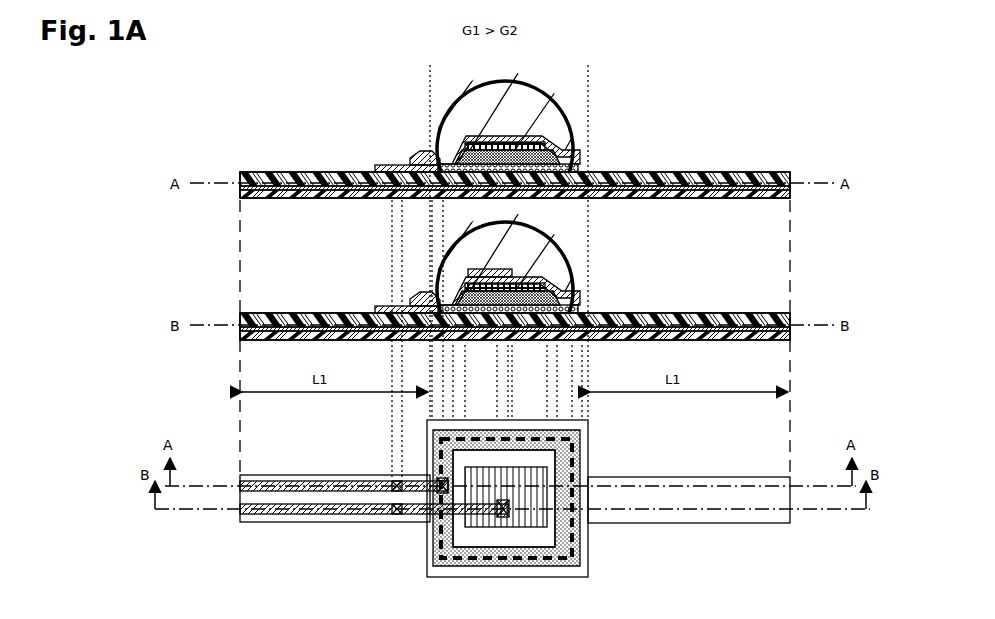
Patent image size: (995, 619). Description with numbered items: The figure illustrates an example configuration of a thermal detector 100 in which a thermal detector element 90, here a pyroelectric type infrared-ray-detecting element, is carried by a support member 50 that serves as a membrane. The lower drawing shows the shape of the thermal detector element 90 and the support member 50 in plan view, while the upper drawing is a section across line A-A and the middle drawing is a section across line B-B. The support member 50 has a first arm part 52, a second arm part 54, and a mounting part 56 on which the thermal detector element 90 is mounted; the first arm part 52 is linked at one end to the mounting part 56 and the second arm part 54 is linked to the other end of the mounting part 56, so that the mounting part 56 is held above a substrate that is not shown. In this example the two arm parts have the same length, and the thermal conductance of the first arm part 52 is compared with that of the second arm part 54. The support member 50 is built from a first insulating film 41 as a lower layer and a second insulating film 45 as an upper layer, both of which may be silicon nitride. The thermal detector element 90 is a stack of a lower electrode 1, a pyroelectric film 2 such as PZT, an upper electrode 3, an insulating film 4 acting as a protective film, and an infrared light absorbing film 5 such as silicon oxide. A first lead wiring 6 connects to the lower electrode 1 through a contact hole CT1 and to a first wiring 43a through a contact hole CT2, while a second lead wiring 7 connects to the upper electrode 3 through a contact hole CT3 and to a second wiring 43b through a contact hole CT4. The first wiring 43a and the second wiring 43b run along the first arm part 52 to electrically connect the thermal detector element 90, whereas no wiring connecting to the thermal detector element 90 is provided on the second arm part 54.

The thermal detector 100 is at (352, 134).
The thermal detector element 90 is at (560, 82).
The lower electrode 1 is at (568, 168).
The pyroelectric film 2 is at (556, 156).
The upper electrode 3 is at (542, 140).
The insulating film 4 is at (540, 126).
The infrared light absorbing film 5 is at (548, 104).
The first lead wiring 6 is at (418, 154).
The second lead wiring 7 is at (385, 307).
The first insulating film 41 is at (240, 195).
The first wiring 43a is at (240, 186).
The second wiring 43b is at (240, 327).
The second insulating film 45 is at (240, 174).
The support member 50 is at (135, 128).
The first arm part 52 is at (325, 523).
The second arm part 54 is at (686, 523).
The mounting part 56 is at (548, 576).
The contact hole CT1 is at (404, 200).
The contact hole CT2 is at (390, 200).
The contact hole CT3 is at (478, 342).
The contact hole CT4 is at (392, 342).